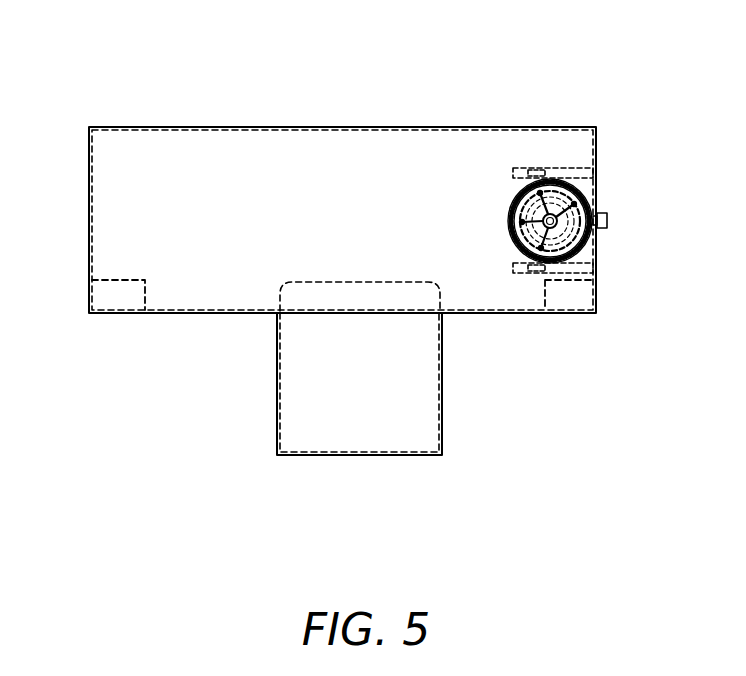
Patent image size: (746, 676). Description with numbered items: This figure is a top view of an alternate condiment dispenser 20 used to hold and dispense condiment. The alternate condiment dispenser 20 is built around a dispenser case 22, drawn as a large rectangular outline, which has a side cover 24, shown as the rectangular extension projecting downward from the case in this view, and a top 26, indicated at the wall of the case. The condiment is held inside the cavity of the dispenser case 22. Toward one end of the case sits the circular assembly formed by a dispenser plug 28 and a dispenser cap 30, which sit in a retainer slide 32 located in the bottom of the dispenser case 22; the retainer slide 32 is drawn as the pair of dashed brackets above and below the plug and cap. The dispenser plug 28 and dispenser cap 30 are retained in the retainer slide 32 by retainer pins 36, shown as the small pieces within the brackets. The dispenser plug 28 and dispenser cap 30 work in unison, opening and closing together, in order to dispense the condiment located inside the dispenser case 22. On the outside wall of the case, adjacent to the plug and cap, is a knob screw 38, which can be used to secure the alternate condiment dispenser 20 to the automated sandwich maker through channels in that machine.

The alternate condiment dispenser 20 is at (131, 364).
The dispenser case 22 is at (302, 124).
The side cover 24 is at (396, 463).
The top 26 is at (108, 201).
The dispenser plug 28 is at (557, 243).
The dispenser cap 30 is at (580, 236).
The retainer slide 32 is at (565, 168).
The retainer pins 36 is at (530, 170).
The knob screw 38 is at (607, 218).